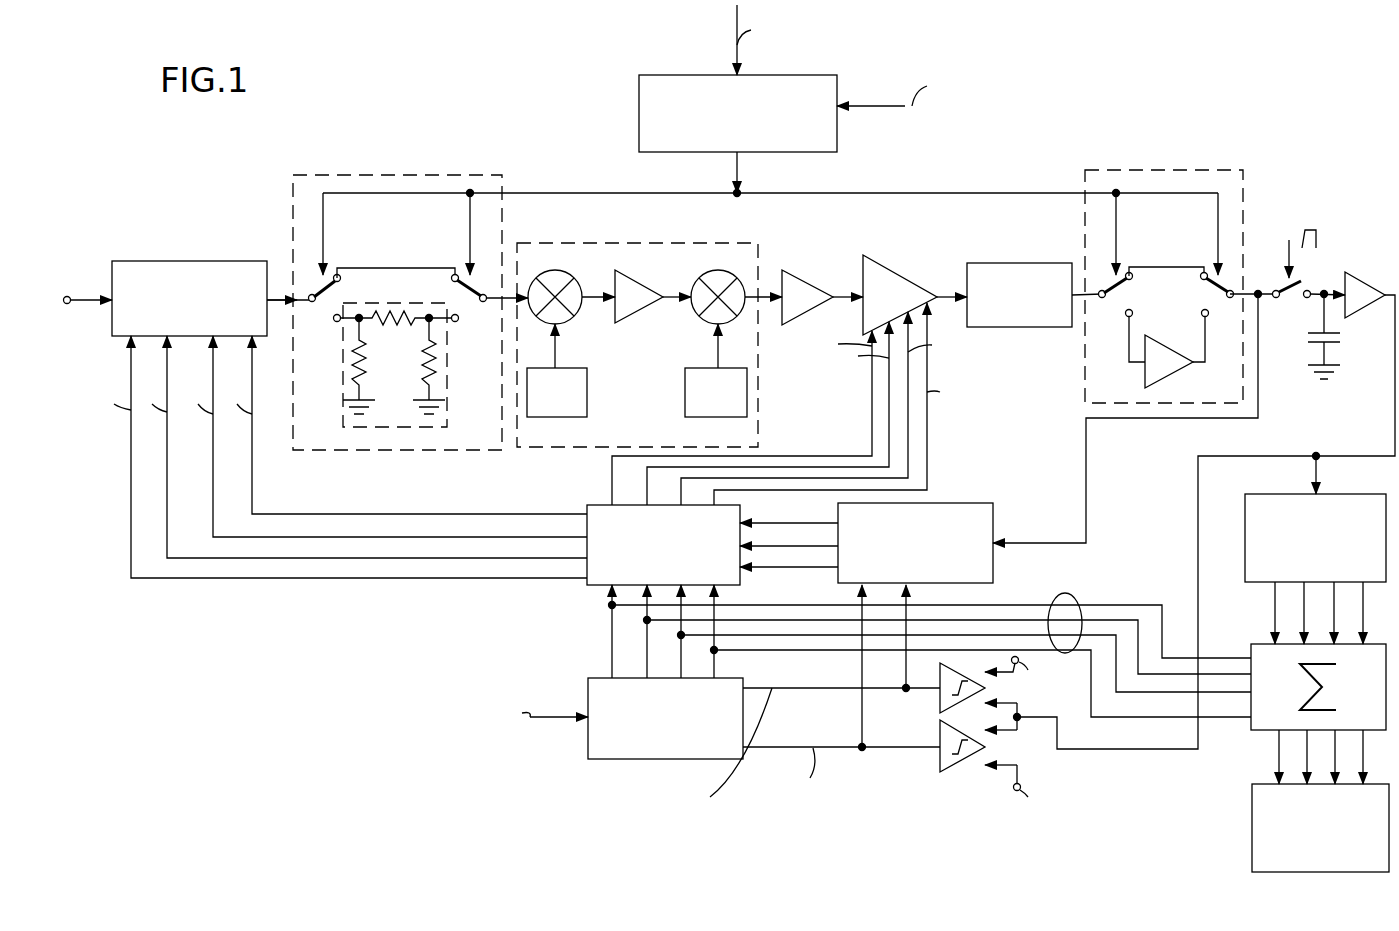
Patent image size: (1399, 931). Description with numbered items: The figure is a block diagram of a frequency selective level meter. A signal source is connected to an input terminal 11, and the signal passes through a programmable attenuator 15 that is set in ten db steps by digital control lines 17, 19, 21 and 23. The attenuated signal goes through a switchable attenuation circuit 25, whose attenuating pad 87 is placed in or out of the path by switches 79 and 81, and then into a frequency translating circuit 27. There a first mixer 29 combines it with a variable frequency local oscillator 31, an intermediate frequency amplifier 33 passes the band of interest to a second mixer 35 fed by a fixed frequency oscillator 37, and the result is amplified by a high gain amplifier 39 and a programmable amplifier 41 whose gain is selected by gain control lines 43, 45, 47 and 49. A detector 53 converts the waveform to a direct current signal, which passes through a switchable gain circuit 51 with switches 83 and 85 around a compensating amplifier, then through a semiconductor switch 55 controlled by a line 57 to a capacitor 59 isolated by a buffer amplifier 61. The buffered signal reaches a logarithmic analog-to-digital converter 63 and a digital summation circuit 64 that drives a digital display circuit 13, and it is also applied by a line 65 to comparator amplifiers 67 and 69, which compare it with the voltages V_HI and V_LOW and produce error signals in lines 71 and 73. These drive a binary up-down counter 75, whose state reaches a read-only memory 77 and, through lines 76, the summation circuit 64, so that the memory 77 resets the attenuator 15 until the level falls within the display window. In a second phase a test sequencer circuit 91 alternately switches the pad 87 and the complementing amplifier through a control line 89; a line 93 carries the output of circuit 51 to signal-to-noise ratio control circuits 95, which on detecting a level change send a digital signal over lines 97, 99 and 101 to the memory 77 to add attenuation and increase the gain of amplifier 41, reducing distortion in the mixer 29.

The input terminal 11 is at (68, 296).
The digital display circuit 13 is at (1252, 806).
The programmable attenuator 15 is at (190, 261).
The control line 17 is at (131, 472).
The control line 19 is at (167, 466).
The control line 21 is at (213, 465).
The control line 23 is at (252, 462).
The switchable attenuation circuit 25 is at (410, 336).
The frequency translating circuit 27 is at (645, 355).
The first mixer 29 is at (560, 276).
The variable frequency local oscillator 31 is at (587, 386).
The intermediate frequency amplifier 33 is at (645, 312).
The second mixer 35 is at (706, 276).
The fixed frequency oscillator 37 is at (685, 380).
The high gain amplifier 39 is at (812, 285).
The programmable amplifier 41 is at (900, 275).
The gain control line 43 is at (872, 412).
The gain control line 45 is at (889, 435).
The gain control line 47 is at (908, 414).
The gain control line 49 is at (927, 438).
The switchable gain circuit 51 is at (1130, 287).
The detector 53 is at (1035, 263).
The semiconductor switch 55 is at (1263, 315).
The control line 57 is at (1294, 256).
The capacitor 59 is at (1308, 342).
The buffer amplifier 61 is at (1360, 275).
The logarithmic analog-to-digital converter 63 is at (1245, 546).
The digital summation circuit 64 is at (1255, 644).
The line 65 is at (1140, 749).
The comparator amplifier 67 is at (950, 700).
The comparator amplifier 69 is at (955, 757).
The line 71 is at (888, 688).
The line 73 is at (885, 748).
The binary up-down counter 75 is at (603, 760).
The lines 76 is at (1070, 586).
The read-only memory 77 is at (587, 588).
The switch 79 is at (318, 322).
The switch 81 is at (477, 305).
The switch 83 is at (1110, 300).
The switch 85 is at (1226, 300).
The attenuating pad 87 is at (447, 412).
The control line 89 is at (607, 193).
The test sequencer circuit 91 is at (660, 75).
The line 93 is at (1086, 457).
The signal-to-noise ratio control circuits 95 is at (993, 515).
The line 97 is at (805, 523).
The line 99 is at (783, 547).
The line 101 is at (832, 567).